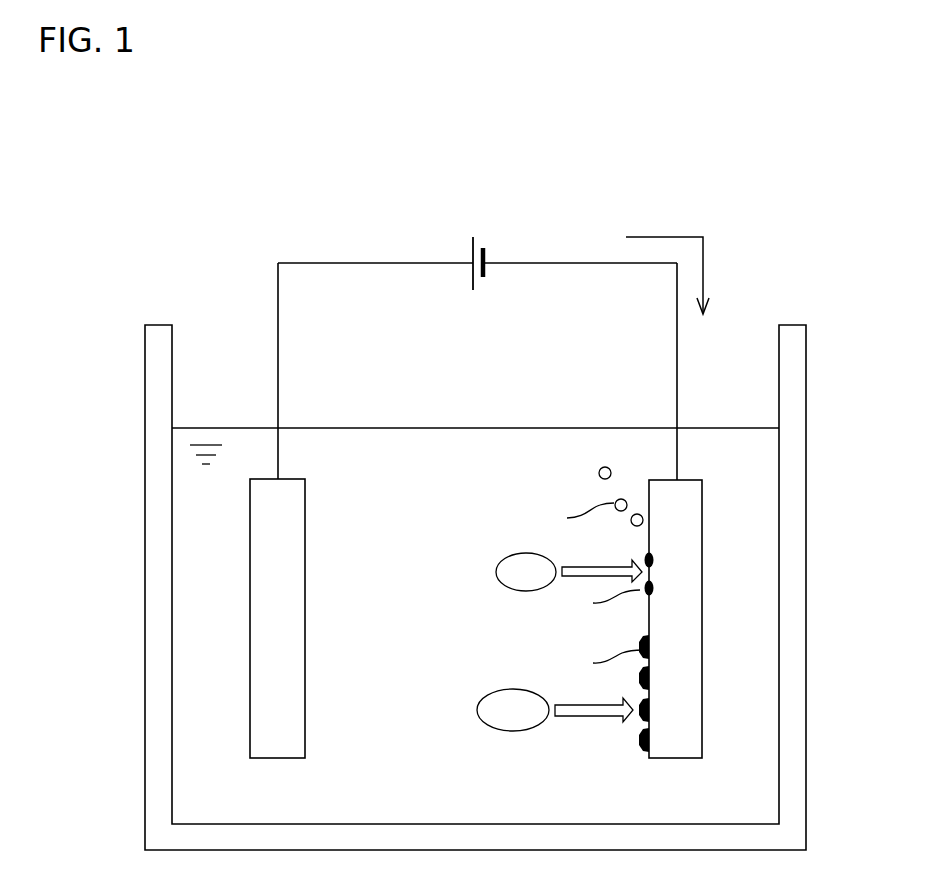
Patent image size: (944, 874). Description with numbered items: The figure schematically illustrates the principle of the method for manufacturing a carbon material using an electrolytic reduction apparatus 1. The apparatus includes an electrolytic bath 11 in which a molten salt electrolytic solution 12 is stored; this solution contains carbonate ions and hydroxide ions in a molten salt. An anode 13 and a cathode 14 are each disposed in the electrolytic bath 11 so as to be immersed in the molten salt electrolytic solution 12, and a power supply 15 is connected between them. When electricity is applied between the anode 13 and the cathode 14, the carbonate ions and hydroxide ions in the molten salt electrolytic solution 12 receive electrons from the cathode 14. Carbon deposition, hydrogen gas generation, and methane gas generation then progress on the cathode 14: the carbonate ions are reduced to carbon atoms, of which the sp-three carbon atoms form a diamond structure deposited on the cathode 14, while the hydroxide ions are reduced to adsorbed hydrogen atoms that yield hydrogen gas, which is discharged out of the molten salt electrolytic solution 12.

The electrolytic reduction apparatus 1 is at (196, 178).
The electrolytic bath 11 is at (157, 381).
The molten salt electrolytic solution 12 is at (200, 566).
The anode 13 is at (248, 680).
The cathode 14 is at (703, 681).
The power supply 15 is at (473, 245).